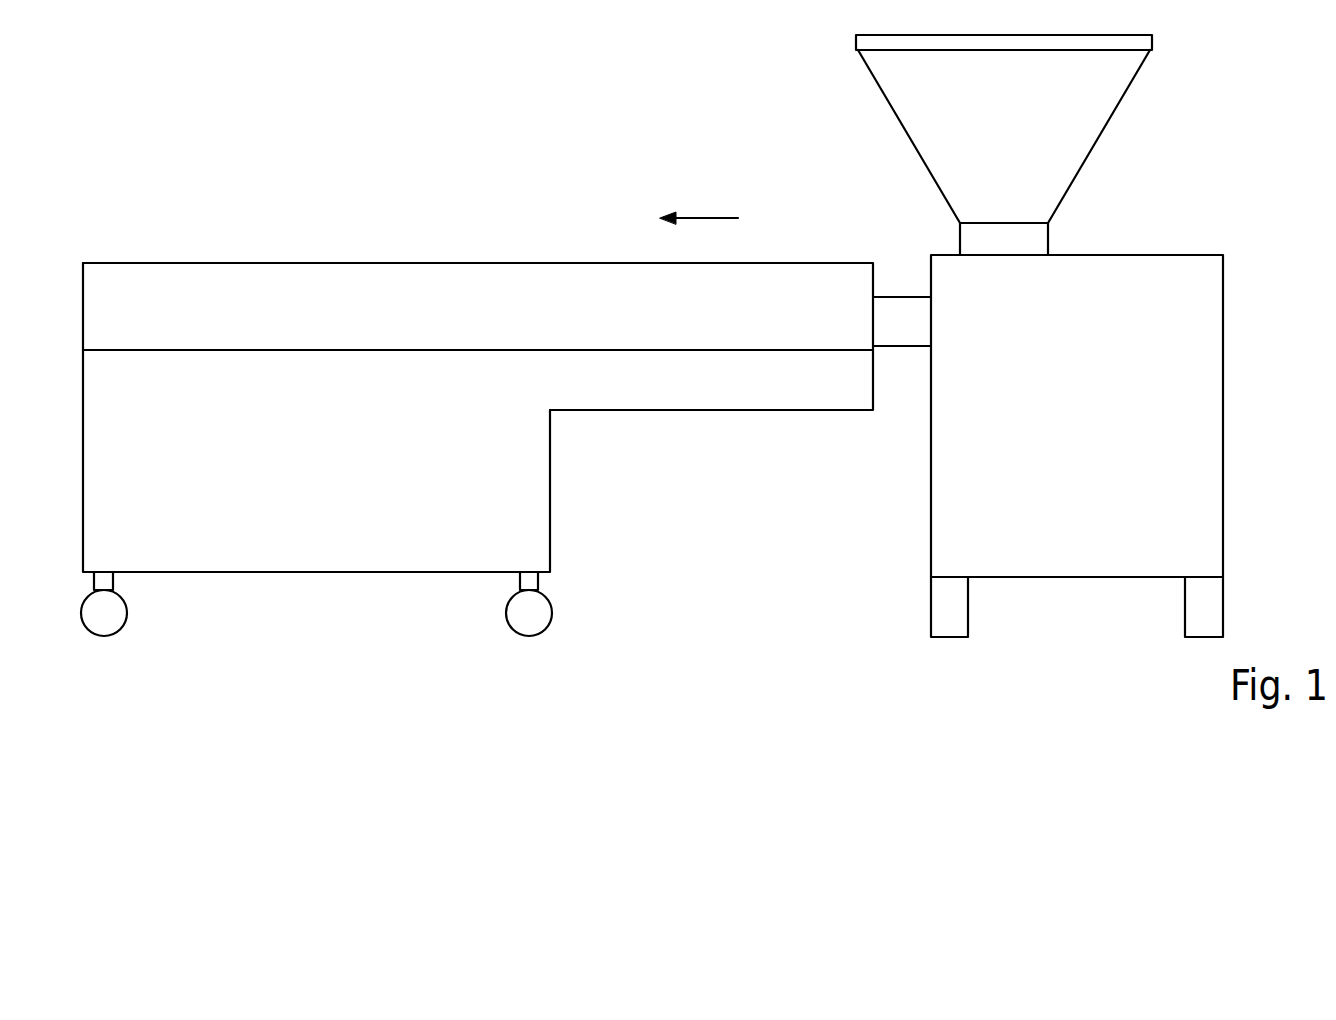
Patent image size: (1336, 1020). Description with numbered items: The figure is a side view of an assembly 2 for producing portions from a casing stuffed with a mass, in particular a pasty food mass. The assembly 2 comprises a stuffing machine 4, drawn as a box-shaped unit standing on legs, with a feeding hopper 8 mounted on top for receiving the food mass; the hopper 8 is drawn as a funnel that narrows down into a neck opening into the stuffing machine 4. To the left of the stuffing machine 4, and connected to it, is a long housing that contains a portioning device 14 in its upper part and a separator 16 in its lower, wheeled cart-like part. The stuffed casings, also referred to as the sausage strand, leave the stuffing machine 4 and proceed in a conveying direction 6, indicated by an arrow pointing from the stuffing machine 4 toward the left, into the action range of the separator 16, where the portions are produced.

The assembly 2 is at (177, 137).
The stuffing machine 4 is at (1200, 398).
The conveying direction 6 is at (702, 218).
The feeding hopper 8 is at (1108, 78).
The portioning device 14 is at (747, 420).
The separator 16 is at (340, 542).